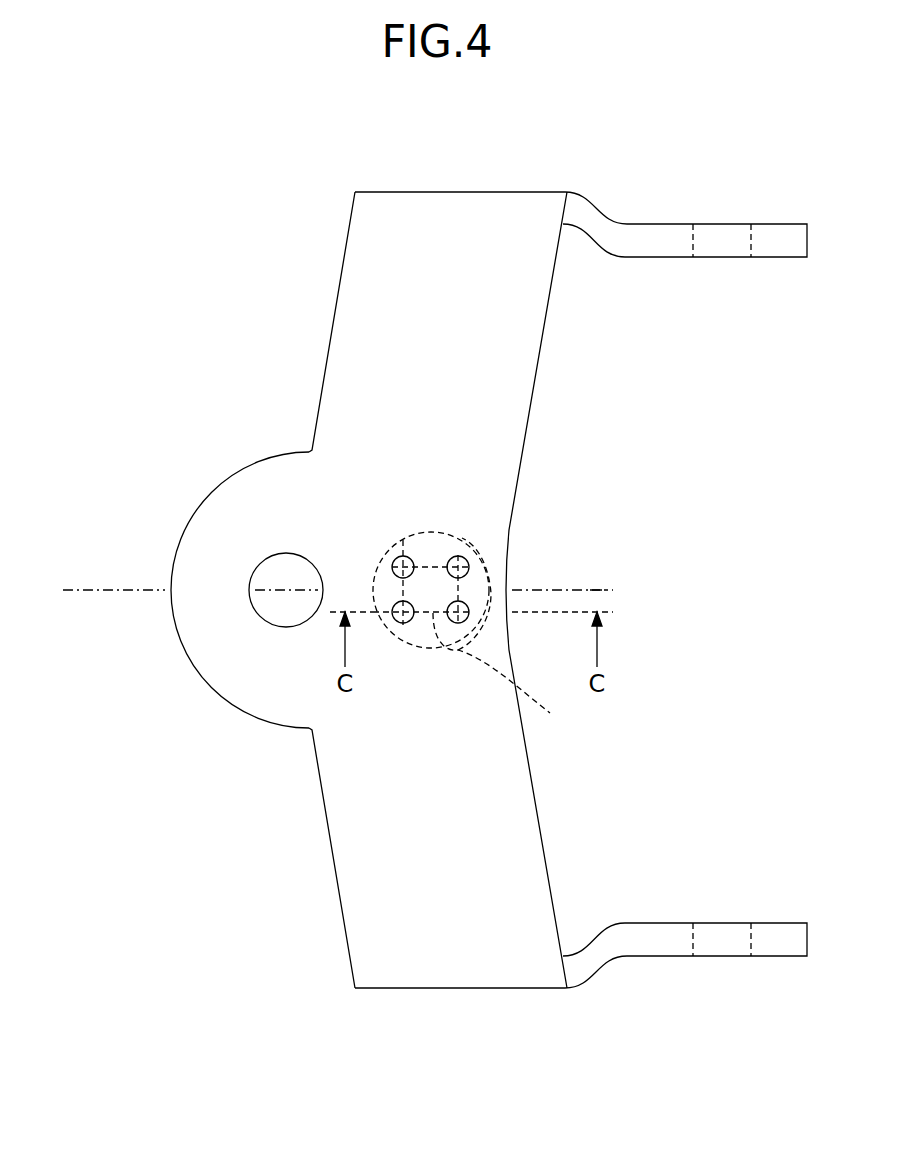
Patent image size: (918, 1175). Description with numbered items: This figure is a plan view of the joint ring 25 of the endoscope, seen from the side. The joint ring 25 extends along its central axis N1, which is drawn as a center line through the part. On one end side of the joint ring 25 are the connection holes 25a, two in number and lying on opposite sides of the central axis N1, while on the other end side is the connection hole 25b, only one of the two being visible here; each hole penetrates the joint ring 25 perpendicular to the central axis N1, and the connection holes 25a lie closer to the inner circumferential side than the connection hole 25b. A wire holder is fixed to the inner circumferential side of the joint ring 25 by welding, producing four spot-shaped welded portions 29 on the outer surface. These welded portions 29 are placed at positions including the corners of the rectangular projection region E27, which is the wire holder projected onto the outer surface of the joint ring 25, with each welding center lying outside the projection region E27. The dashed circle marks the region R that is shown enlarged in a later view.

The joint ring 25 is at (345, 181).
The connection holes 25a is at (751, 240).
The connection hole 25b is at (272, 562).
The welded portion 29 is at (403, 556).
The region R is at (463, 540).
The projection region E27 is at (505, 643).
The central axis N1 is at (600, 590).